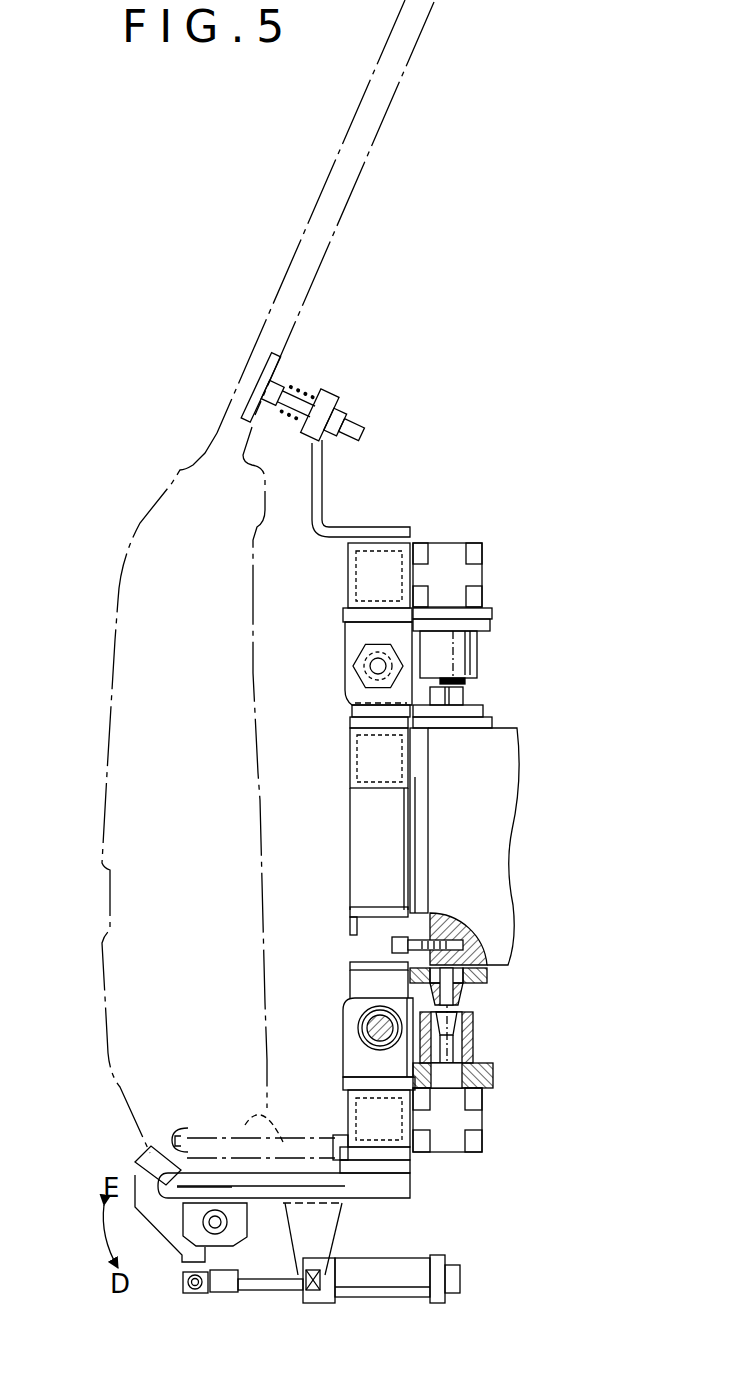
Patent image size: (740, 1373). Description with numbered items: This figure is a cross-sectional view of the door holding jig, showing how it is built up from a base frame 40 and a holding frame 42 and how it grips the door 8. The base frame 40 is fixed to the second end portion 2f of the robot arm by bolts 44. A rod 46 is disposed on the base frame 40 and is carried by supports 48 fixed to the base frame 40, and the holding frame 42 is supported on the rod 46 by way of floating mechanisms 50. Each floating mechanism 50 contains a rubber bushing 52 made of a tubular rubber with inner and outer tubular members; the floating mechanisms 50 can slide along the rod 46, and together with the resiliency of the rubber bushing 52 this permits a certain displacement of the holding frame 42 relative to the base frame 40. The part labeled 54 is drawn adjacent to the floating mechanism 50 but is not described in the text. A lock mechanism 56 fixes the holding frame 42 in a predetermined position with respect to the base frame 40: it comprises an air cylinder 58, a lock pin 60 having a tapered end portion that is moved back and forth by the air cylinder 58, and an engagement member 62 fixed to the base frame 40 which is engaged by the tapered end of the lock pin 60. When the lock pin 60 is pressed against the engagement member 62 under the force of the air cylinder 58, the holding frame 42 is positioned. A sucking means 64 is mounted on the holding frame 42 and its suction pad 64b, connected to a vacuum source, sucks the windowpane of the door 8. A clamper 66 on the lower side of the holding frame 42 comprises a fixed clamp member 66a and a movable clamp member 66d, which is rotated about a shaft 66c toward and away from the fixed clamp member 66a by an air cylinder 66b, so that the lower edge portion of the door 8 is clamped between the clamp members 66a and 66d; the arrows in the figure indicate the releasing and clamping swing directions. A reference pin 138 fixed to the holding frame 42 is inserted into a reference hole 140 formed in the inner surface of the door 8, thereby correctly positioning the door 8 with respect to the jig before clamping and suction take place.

The second end portion 2f is at (510, 728).
The door 8 is at (140, 522).
The base frame 40 is at (350, 752).
The holding frame 42 is at (348, 578).
The bolt 44 is at (392, 943).
The rod 46 is at (358, 650).
The support 48 is at (355, 680).
The floating mechanism 50 is at (343, 628).
The rubber bushing 52 is at (366, 1035).
The plate 54 is at (350, 700).
The lock mechanism 56 is at (495, 1003).
The air cylinder 58 is at (483, 600).
The lock pin 60 is at (470, 680).
The engagement member 62 is at (463, 695).
The sucking means 64 is at (329, 418).
The suction pad 64b is at (282, 383).
The clamper 66 is at (245, 1227).
The fixed clamp member 66a is at (228, 1167).
The air cylinder 66b is at (388, 1290).
The shaft 66c is at (168, 1222).
The movable clamp member 66d is at (140, 1150).
The reference pin 138 is at (256, 1110).
The reference hole 140 is at (169, 1128).